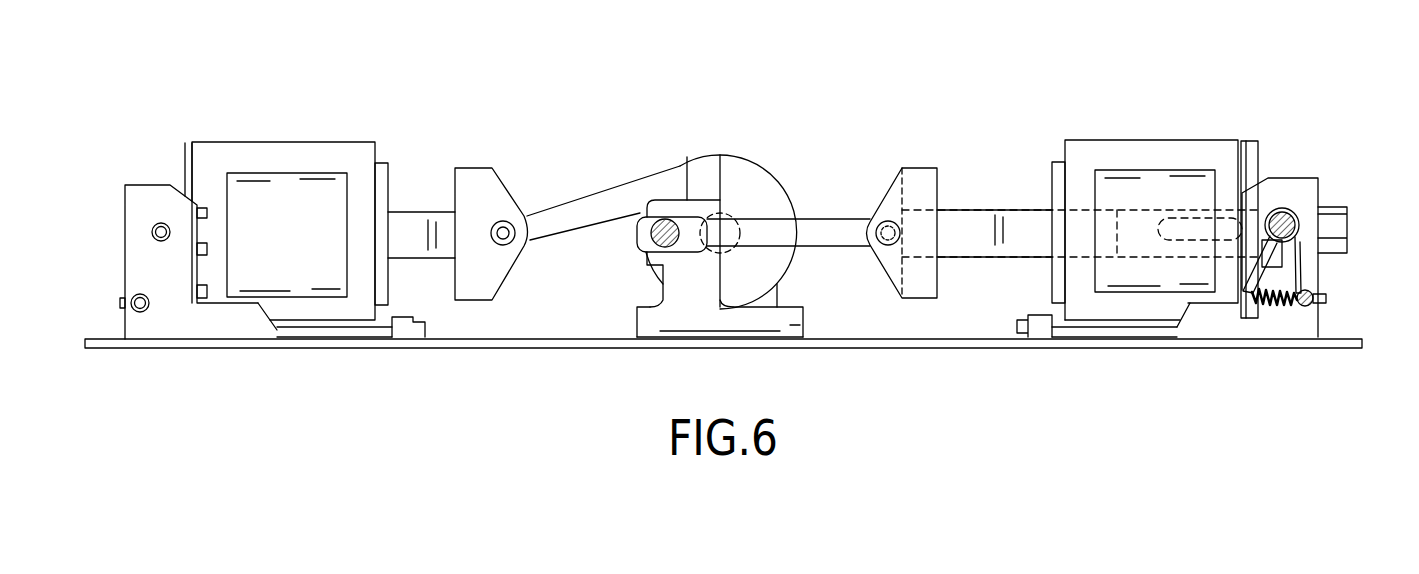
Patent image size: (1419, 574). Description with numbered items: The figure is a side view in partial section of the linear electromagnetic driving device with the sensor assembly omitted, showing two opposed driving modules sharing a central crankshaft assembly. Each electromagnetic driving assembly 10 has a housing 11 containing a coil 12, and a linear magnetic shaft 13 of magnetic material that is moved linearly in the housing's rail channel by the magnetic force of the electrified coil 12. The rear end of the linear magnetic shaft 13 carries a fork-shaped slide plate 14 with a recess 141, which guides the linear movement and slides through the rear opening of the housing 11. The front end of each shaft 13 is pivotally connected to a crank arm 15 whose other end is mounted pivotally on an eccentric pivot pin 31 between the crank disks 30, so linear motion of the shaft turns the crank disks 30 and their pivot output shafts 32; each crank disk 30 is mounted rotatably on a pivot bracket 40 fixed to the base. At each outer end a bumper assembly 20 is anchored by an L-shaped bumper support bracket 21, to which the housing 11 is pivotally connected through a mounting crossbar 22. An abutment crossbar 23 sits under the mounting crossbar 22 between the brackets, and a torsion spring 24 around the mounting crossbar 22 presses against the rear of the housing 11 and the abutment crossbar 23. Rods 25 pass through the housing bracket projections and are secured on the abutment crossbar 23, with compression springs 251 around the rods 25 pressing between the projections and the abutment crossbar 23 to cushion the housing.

The electromagnetic driving assembly 10 is at (801, 230).
The housing 11 is at (241, 155).
The coil 12 is at (312, 188).
The linear magnetic shaft 13 is at (418, 222).
The slide plate 14 is at (1159, 230).
The recess 141 is at (1340, 232).
The crank arm 15 is at (592, 208).
The bumper assembly 20 is at (729, 253).
The bumper support bracket 21 is at (163, 274).
The mounting crossbar 22 is at (1295, 215).
The abutment crossbar 23 is at (1305, 304).
The torsion spring 24 is at (1300, 272).
The rod 25 is at (1326, 302).
The compression spring 251 is at (1283, 296).
The crank disk 30 is at (706, 216).
The eccentric pivot pin 31 is at (652, 247).
The pivot output shaft 32 is at (748, 208).
The pivot bracket 40 is at (678, 302).